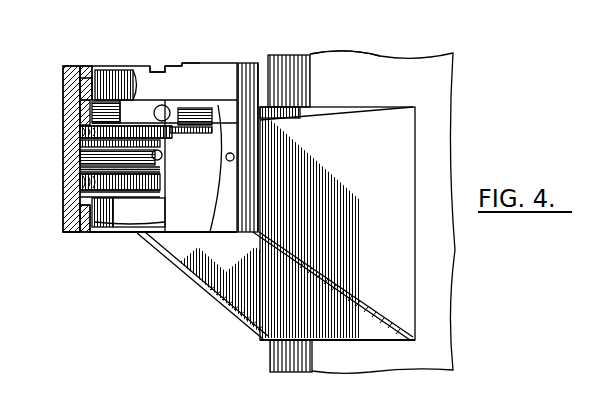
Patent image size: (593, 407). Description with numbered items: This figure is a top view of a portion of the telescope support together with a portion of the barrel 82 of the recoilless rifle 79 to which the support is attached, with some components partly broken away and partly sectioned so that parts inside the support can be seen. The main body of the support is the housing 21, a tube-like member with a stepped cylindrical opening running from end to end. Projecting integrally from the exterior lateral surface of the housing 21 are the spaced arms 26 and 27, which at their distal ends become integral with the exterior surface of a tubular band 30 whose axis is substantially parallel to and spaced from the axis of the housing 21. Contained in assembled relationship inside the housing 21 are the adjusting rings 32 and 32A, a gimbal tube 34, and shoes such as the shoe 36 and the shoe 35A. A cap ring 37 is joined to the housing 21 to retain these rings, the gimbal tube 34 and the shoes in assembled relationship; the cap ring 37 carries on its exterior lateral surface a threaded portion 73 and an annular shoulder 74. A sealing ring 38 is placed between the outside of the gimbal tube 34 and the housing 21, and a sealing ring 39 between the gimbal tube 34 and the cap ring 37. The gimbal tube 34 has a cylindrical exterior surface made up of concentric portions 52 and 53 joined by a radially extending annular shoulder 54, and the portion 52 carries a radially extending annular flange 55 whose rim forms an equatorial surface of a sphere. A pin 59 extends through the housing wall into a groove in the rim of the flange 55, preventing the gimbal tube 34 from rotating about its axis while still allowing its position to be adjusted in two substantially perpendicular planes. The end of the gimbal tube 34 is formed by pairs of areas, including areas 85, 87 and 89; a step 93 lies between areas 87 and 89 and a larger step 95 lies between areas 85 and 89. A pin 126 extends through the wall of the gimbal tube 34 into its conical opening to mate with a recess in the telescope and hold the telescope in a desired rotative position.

The housing 21 is at (72, 237).
The arm 26 is at (220, 287).
The arm 27 is at (375, 308).
The tubular band 30 is at (366, 330).
The adjusting ring 32 is at (70, 186).
The adjusting ring 32A is at (74, 132).
The gimbal tube 34 is at (118, 237).
The shoe 35A is at (222, 112).
The shoe 36 is at (70, 172).
The cap ring 37 is at (60, 64).
The sealing ring 38 is at (78, 214).
The sealing ring 39 is at (78, 82).
The concentric portion 52 is at (75, 108).
The concentric portion 53 is at (137, 80).
The annular shoulder 54 is at (110, 70).
The annular flange 55 is at (70, 156).
The pin 59 is at (228, 162).
The threaded portion 73 is at (188, 112).
The annular shoulder 74 is at (172, 152).
The recoilless rifle 79 is at (384, 48).
The barrel 82 is at (437, 95).
The area 85 is at (152, 68).
The area 87 is at (198, 64).
The area 89 is at (180, 62).
The step 93 is at (186, 62).
The step 95 is at (172, 66).
The pin 126 is at (166, 106).